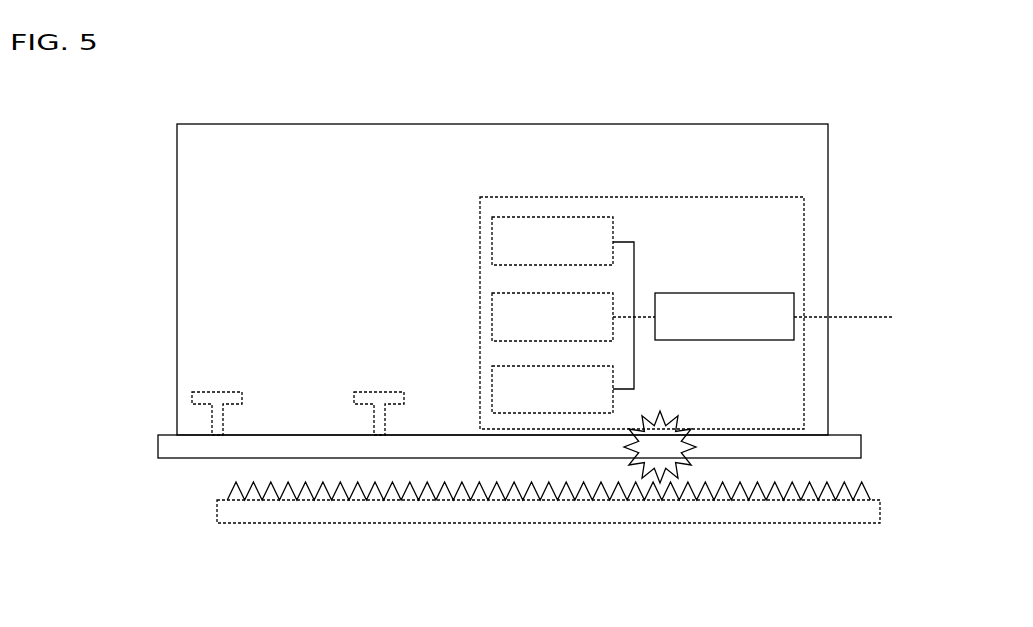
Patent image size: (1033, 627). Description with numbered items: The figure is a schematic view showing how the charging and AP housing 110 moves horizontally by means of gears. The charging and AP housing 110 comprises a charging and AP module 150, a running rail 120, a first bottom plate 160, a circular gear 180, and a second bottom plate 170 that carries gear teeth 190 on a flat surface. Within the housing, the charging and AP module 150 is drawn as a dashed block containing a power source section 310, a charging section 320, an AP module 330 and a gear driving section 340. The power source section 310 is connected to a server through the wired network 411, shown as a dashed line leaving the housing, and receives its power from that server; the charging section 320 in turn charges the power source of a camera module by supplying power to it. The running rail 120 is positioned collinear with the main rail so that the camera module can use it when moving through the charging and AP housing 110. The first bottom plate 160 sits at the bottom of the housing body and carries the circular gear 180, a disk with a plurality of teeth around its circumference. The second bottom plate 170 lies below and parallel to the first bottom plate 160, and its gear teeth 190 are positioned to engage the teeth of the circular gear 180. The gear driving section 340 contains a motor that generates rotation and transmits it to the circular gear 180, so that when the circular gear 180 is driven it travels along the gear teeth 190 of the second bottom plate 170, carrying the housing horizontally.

The charging and AP housing 110 is at (500, 124).
The running rail 120 is at (216, 392).
The charging and AP module 150 is at (645, 197).
The first bottom plate 160 is at (158, 447).
The second bottom plate 170 is at (788, 517).
The circular gear 180 is at (662, 462).
The gear teeth 190 is at (703, 498).
The power source section 310 is at (757, 340).
The charging section 320 is at (492, 242).
The AP module 330 is at (492, 317).
The gear driving section 340 is at (492, 391).
The wired network 411 is at (841, 316).